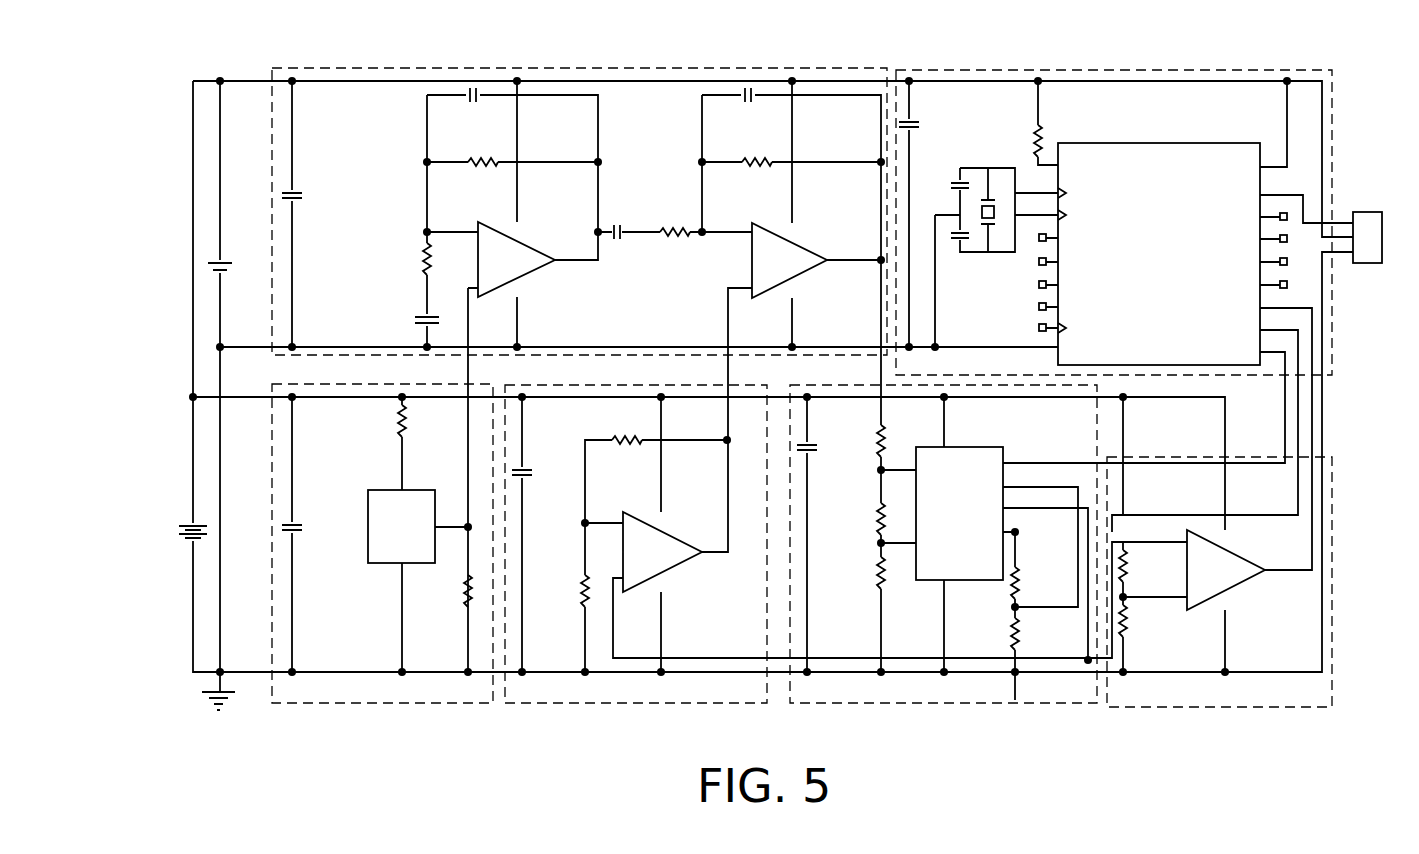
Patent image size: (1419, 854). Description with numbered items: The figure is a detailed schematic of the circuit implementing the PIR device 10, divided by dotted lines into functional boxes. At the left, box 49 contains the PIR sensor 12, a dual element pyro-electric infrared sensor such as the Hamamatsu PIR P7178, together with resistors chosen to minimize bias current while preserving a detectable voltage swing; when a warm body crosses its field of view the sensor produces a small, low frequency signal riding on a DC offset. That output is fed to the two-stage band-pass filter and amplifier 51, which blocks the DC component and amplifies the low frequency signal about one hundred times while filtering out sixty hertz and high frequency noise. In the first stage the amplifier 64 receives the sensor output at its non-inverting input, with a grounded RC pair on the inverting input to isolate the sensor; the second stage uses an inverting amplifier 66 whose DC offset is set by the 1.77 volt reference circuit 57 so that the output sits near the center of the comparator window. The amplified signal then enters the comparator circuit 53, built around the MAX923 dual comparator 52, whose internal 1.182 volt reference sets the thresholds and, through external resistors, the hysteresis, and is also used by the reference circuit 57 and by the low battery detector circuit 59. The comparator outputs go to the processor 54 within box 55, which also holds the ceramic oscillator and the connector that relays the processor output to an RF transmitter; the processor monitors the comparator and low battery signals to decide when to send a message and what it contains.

The PIR device 10 is at (157, 662).
The PIR sensor 12 is at (373, 565).
The box 49 is at (270, 703).
The band-pass filter and amplifier 51 is at (270, 153).
The comparator 52 is at (935, 582).
The comparator circuit 53 is at (928, 707).
The processor 54 is at (1217, 143).
The box 55 is at (1332, 338).
The 1.77 volt reference circuit 57 is at (690, 707).
The low battery detector circuit 59 is at (1215, 707).
The amplifier 64 is at (527, 245).
The inverting amplifier 66 is at (800, 247).